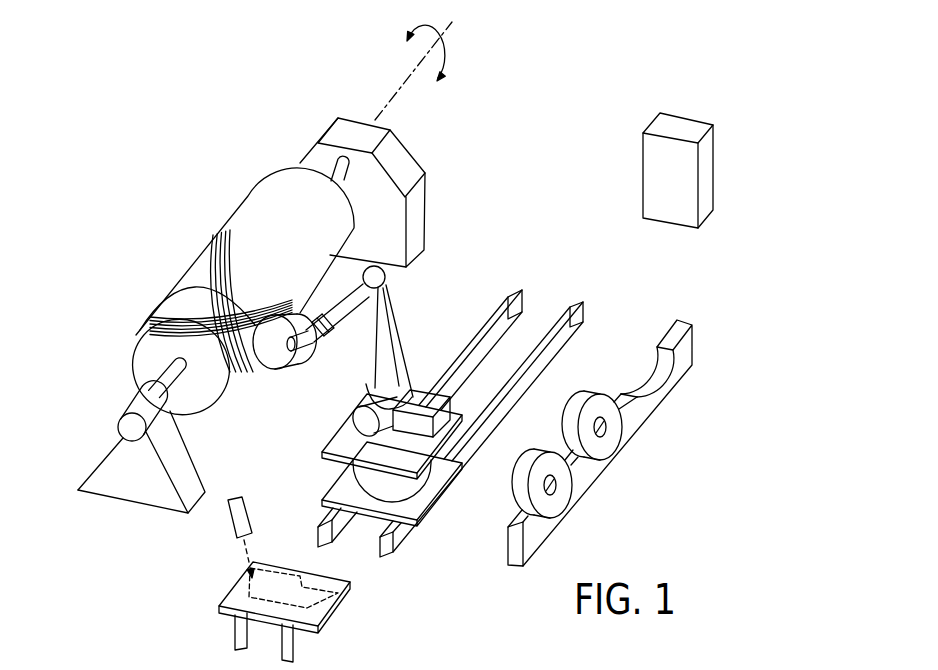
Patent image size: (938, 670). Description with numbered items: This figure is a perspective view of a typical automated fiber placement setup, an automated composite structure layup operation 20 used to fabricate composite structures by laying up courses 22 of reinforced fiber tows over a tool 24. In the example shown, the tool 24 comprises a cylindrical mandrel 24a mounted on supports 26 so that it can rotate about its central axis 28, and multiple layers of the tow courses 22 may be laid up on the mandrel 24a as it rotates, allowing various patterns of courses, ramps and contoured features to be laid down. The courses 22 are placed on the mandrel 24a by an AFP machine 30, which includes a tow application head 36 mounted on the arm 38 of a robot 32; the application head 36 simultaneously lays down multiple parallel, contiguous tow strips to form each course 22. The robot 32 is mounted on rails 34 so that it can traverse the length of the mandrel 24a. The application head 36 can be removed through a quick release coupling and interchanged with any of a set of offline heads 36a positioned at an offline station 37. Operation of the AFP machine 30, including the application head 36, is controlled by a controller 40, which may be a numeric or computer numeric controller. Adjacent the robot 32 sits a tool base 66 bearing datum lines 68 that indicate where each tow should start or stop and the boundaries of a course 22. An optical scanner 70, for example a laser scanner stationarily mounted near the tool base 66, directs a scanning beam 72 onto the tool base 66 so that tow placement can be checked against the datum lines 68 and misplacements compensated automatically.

The automated composite structure layup operation 20 is at (458, 227).
The courses 22 is at (205, 316).
The tool 24 is at (274, 142).
The cylindrical mandrel 24a is at (237, 257).
The supports 26 is at (394, 158).
The central axis 28 is at (400, 88).
The AFP machine 30 is at (408, 301).
The robot 32 is at (410, 385).
The rails 34 is at (583, 315).
The tow application head 36 is at (268, 380).
The offline heads 36a is at (560, 488).
The offline station 37 is at (714, 327).
The arm 38 is at (352, 318).
The controller 40 is at (705, 177).
The tool base 66 is at (235, 596).
The datum lines 68 is at (326, 609).
The optical scanner 70 is at (240, 523).
The scanning beam 72 is at (240, 553).